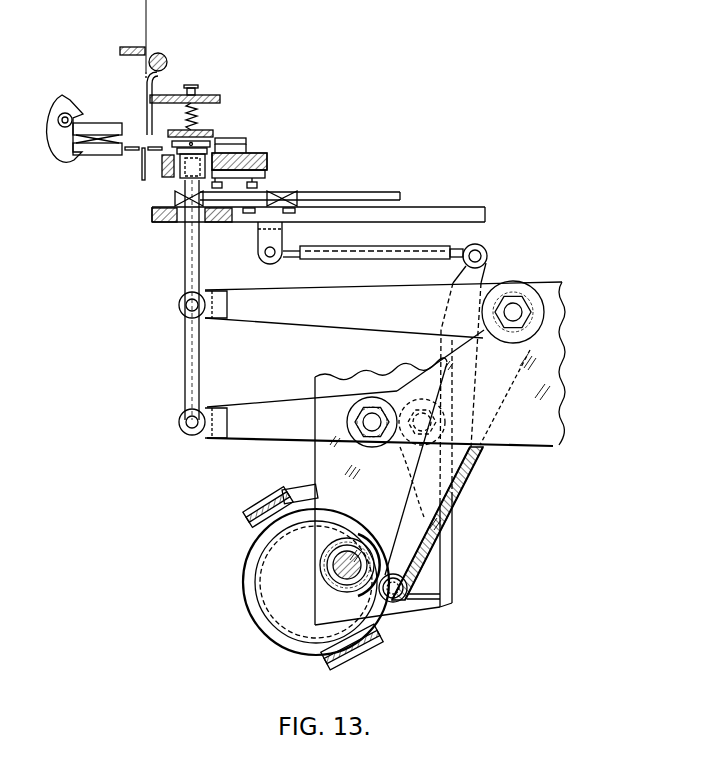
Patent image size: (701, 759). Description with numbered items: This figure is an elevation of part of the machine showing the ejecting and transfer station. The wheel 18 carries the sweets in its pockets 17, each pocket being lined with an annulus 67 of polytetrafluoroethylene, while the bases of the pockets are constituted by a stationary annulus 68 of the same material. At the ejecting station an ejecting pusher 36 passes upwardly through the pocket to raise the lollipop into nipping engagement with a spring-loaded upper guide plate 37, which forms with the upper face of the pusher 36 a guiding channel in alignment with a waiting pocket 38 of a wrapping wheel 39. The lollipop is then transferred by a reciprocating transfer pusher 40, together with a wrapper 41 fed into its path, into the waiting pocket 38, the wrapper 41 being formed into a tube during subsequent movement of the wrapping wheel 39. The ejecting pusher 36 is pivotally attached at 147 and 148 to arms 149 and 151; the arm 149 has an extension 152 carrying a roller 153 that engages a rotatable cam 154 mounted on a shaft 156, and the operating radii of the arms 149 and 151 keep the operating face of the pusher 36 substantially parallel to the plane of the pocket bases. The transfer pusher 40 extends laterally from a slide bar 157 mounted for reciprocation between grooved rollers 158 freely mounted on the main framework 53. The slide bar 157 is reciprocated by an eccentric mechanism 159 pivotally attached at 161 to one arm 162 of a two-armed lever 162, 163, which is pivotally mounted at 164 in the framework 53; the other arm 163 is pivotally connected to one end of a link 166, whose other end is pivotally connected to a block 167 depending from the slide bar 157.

The pockets 17 is at (178, 168).
The wheel 18 is at (268, 161).
The ejecting pusher 36 is at (224, 152).
The spring-loaded upper guide plate 37 is at (205, 132).
The waiting pocket 38 is at (96, 123).
The wrapping wheel 39 is at (60, 152).
The transfer pusher 40 is at (238, 138).
The wrapper 41 is at (150, 47).
The main framework 53 is at (440, 212).
The annulus 67 is at (161, 162).
The stationary annulus 68 is at (263, 173).
The pivotal attachment 147 is at (179, 305).
The pivotal attachment 148 is at (179, 422).
The arm 149 is at (280, 316).
The arm 151 is at (270, 430).
The extension 152 is at (457, 458).
The roller 153 is at (452, 594).
The rotatable cam 154 is at (378, 598).
The shaft 156 is at (333, 566).
The slide bar 157 is at (378, 183).
The grooved rollers 158 is at (172, 222).
The eccentric mechanism 159 is at (280, 561).
The pivotal attachment 161 is at (450, 516).
The arm 162 is at (455, 478).
The arm 163 is at (468, 279).
The pivot 164 is at (380, 372).
The link 166 is at (345, 256).
The block 167 is at (264, 234).